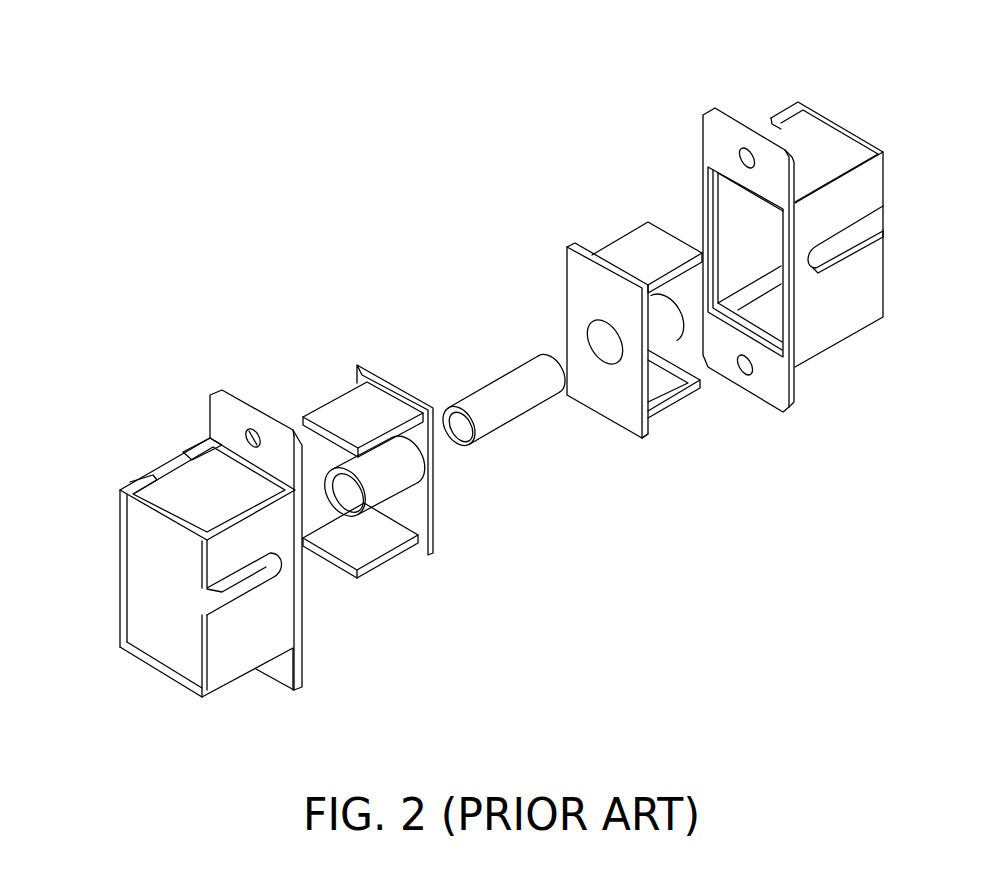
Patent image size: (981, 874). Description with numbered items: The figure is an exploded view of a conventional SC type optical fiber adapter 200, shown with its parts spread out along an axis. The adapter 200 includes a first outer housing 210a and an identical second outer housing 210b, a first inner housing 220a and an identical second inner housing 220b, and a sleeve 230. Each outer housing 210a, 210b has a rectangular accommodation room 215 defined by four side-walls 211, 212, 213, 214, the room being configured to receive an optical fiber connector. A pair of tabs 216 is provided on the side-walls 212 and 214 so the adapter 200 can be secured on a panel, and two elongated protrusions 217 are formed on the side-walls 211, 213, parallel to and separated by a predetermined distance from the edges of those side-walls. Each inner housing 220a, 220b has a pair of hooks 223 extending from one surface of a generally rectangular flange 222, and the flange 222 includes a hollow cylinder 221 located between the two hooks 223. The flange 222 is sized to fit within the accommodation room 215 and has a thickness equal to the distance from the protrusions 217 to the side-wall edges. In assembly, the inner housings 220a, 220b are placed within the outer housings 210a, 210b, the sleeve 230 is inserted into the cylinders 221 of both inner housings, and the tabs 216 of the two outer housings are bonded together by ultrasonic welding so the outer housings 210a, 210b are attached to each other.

The optical fiber adapter 200 is at (208, 205).
The first outer housing 210a is at (120, 352).
The second outer housing 210b is at (704, 84).
The side-wall 211 is at (233, 658).
The side-wall 212 is at (157, 517).
The side-wall 213 is at (125, 571).
The side-wall 214 is at (183, 683).
The rectangular accommodation room 215 is at (173, 630).
The tabs 216 is at (225, 408).
The elongated protrusions 217 is at (713, 193).
The first inner housing 220a is at (273, 328).
The second inner housing 220b is at (597, 216).
The hollow cylinder 221 is at (380, 478).
The rectangular flange 222 is at (436, 484).
The hooks 223 is at (348, 400).
The sleeve 230 is at (497, 400).